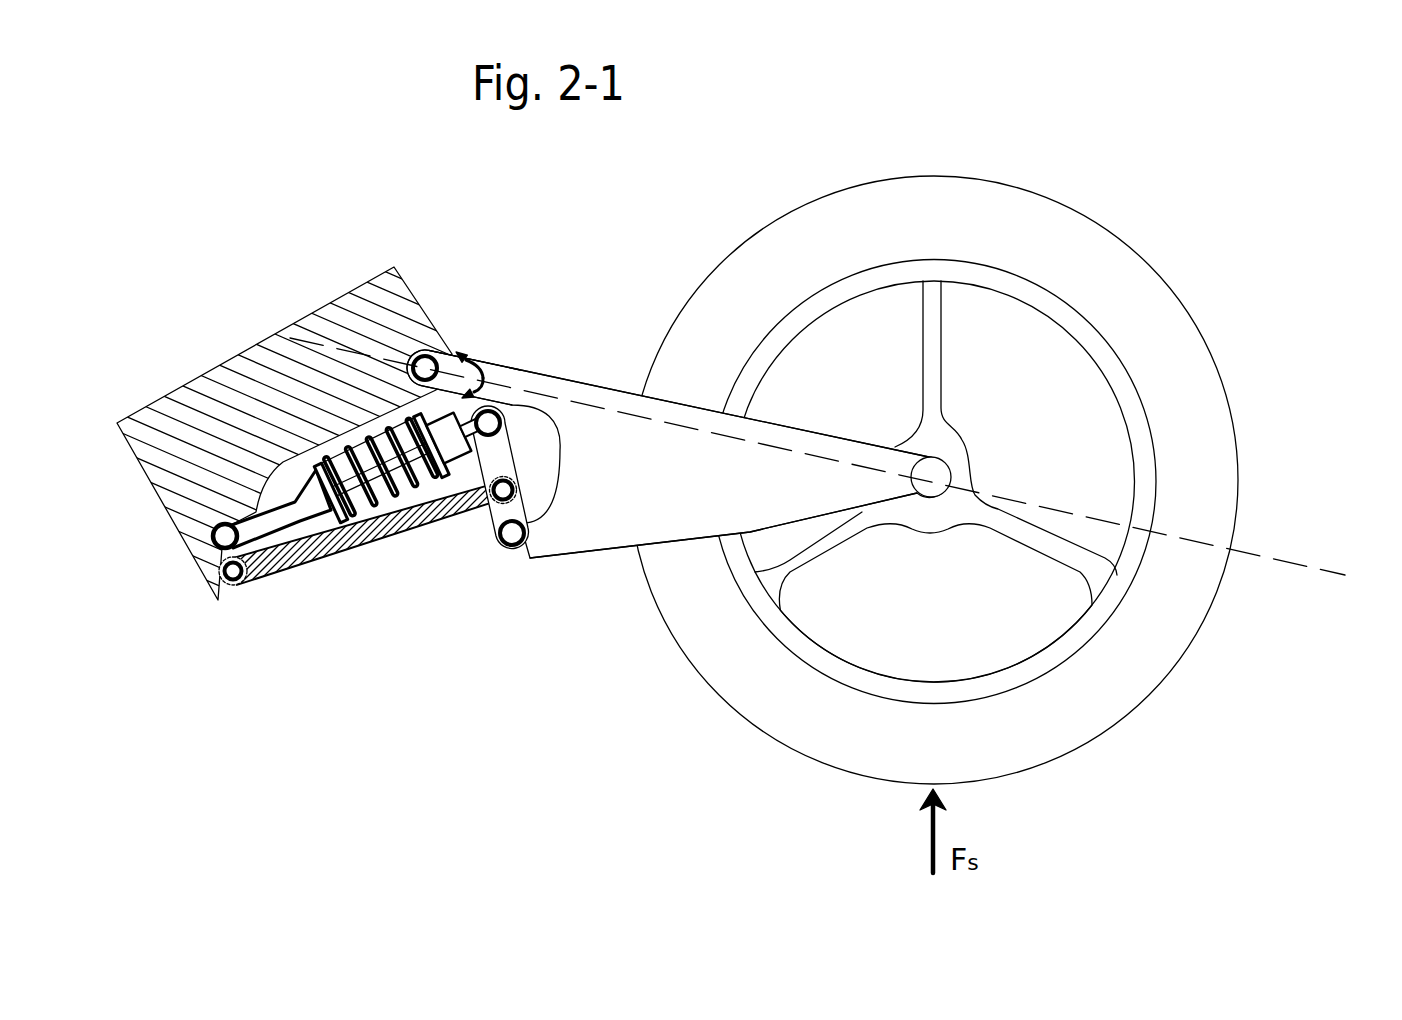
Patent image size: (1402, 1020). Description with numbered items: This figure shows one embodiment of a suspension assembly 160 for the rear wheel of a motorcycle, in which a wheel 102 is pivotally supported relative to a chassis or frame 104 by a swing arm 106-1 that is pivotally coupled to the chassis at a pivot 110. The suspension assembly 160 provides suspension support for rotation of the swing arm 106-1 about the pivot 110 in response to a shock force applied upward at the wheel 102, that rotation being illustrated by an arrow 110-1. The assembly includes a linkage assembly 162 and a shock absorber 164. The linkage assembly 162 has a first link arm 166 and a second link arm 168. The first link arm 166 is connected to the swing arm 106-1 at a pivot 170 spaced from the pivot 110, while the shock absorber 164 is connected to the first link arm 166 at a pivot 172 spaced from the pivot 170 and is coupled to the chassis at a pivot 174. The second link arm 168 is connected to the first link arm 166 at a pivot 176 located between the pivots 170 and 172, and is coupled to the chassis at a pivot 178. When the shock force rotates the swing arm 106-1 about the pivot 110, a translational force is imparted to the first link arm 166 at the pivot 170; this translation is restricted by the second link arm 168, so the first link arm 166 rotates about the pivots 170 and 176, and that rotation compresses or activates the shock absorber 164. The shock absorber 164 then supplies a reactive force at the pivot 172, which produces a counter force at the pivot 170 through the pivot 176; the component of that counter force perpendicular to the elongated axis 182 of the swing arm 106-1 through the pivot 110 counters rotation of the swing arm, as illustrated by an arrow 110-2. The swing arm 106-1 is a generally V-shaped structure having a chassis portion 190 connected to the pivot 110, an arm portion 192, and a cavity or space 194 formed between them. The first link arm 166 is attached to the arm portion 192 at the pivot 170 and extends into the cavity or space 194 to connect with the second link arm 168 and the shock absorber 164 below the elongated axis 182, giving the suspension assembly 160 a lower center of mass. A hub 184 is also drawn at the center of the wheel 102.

The wheel 102 is at (1205, 430).
The chassis or frame 104 is at (267, 362).
The swing arm 106-1 is at (790, 440).
The pivot 110 is at (426, 354).
The arrow 110-1 is at (463, 352).
The arrow 110-2 is at (476, 380).
The suspension assembly 160 is at (994, 428).
The linkage assembly 162 is at (678, 485).
The shock absorber 164 is at (278, 510).
The first link arm 166 is at (490, 458).
The second link arm 168 is at (333, 548).
The pivot 170 is at (508, 546).
The pivot 172 is at (498, 420).
The pivot 174 is at (213, 540).
The pivot 176 is at (520, 482).
The pivot 178 is at (231, 588).
The elongated axis 182 is at (1247, 547).
The wheel hub 184 is at (942, 466).
The chassis portion 190 is at (515, 377).
The arm portion 192 is at (549, 540).
The cavity or space 194 is at (640, 395).